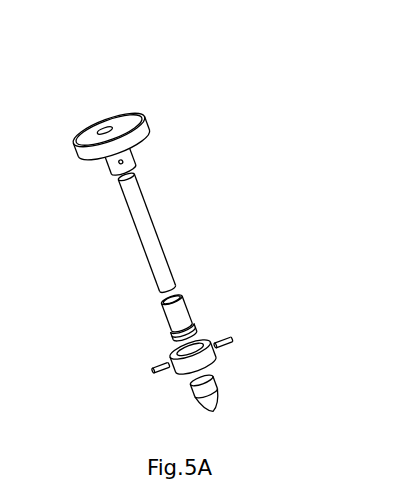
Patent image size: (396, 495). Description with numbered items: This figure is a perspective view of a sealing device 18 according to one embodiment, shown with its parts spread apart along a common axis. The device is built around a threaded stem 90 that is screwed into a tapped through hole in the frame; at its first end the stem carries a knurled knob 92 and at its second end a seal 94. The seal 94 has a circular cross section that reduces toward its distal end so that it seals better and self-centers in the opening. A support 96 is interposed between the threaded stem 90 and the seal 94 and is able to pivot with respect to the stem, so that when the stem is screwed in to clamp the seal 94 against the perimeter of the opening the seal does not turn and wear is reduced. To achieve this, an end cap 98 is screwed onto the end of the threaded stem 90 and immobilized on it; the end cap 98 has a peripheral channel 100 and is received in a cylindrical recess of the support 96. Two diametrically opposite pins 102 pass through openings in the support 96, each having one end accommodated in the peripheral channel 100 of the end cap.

The insertion tool assembly 18 is at (81, 96).
The knurled knob 92 is at (141, 129).
The threaded stem 90 is at (155, 233).
The end cap 98 is at (181, 303).
The peripheral channel 100 is at (173, 337).
The support 96 is at (208, 340).
The pin 102 is at (232, 343).
The seal 94 is at (213, 395).